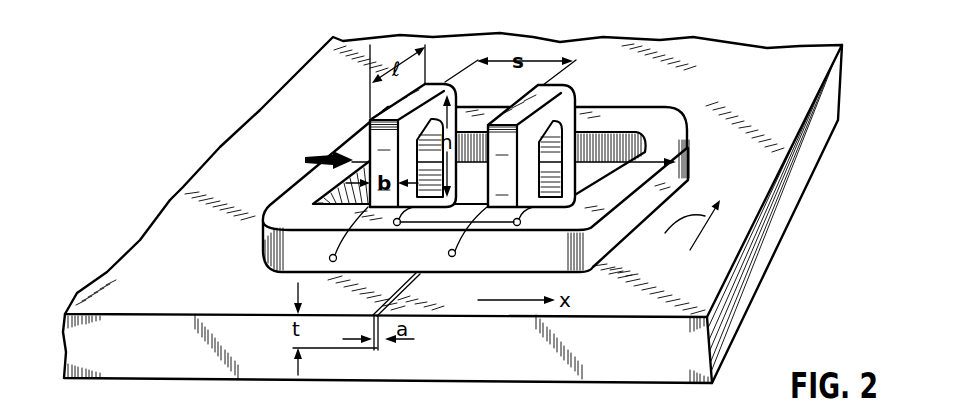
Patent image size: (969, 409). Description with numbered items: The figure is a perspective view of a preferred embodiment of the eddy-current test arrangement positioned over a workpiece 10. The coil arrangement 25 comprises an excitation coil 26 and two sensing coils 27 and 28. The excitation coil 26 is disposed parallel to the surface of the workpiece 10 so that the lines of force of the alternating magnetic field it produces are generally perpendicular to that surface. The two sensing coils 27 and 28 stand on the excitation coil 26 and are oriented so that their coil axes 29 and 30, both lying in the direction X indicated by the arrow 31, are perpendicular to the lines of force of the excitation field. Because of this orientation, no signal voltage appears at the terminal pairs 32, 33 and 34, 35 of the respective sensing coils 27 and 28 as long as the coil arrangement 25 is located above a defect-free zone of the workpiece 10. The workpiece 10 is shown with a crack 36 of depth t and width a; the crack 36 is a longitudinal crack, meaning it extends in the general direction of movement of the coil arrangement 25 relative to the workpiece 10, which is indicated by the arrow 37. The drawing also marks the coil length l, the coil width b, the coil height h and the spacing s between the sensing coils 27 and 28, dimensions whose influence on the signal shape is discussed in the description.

The workpiece 10 is at (792, 192).
The coil arrangement 25 is at (283, 185).
The excitation coil 26 is at (272, 251).
The sensing coil 27 is at (400, 110).
The sensing coil 28 is at (563, 110).
The coil axis 29 is at (355, 160).
The coil axis 30 is at (590, 163).
The arrow 31 is at (510, 302).
The terminal 32 is at (329, 258).
The terminal 33 is at (397, 226).
The terminal 34 is at (456, 254).
The terminal 35 is at (519, 226).
The crack 36 is at (397, 290).
The arrow 37 is at (686, 229).